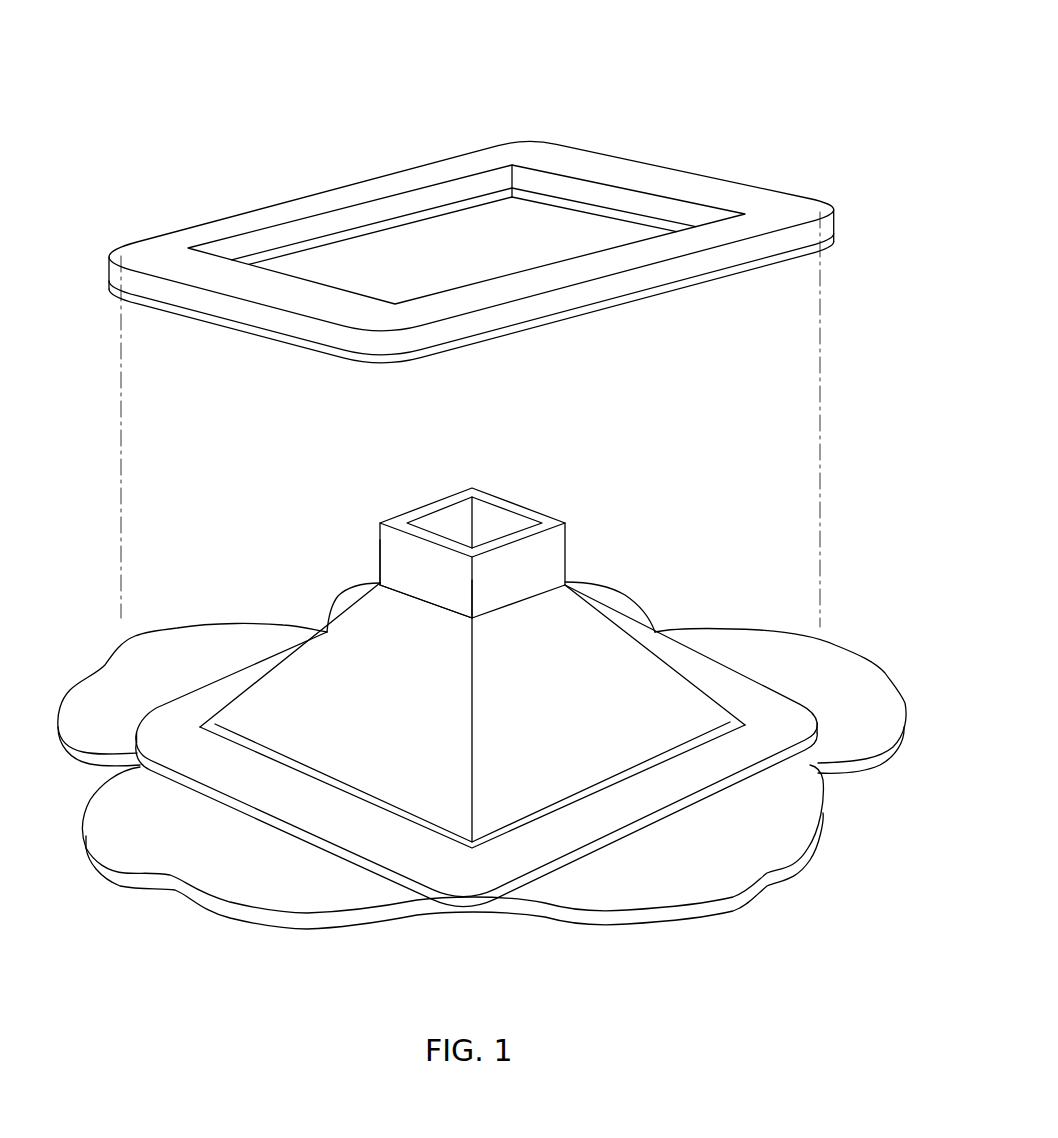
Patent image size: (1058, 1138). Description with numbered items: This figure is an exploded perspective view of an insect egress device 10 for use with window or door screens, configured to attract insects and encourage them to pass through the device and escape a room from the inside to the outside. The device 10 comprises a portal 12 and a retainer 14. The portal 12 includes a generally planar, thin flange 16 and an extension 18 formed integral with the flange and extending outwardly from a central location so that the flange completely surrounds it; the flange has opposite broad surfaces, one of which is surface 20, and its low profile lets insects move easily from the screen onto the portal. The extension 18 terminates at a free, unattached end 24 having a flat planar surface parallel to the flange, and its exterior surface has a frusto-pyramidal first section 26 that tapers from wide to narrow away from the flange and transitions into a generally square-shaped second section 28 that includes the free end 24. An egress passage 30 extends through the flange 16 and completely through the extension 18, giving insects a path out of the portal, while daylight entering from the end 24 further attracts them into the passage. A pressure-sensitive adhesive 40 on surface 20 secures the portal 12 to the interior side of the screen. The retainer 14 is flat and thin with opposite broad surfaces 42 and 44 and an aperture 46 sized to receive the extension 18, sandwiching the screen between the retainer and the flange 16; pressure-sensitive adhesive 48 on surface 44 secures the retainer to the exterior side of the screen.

The insect egress device 10 is at (100, 112).
The portal 12 is at (153, 893).
The retainer 14 is at (788, 182).
The flange 16 is at (712, 908).
The extension 18 is at (601, 638).
The broad surface 20 is at (252, 895).
The free end 24 is at (530, 515).
The first section 26 is at (628, 703).
The second section 28 is at (397, 555).
The egress passage 30 is at (456, 525).
The pressure-sensitive adhesive 40 is at (788, 737).
The broad surface 42 is at (373, 188).
The broad surface 44 is at (283, 343).
The aperture 46 is at (528, 248).
The pressure-sensitive adhesive 48 is at (165, 318).